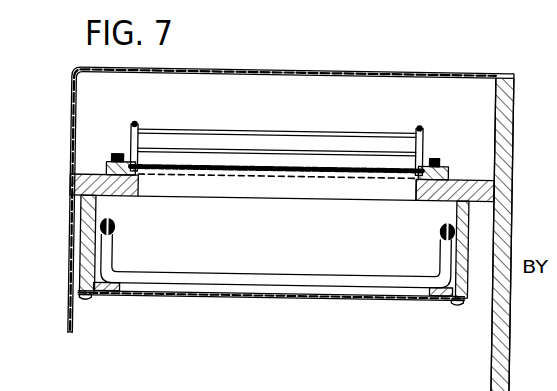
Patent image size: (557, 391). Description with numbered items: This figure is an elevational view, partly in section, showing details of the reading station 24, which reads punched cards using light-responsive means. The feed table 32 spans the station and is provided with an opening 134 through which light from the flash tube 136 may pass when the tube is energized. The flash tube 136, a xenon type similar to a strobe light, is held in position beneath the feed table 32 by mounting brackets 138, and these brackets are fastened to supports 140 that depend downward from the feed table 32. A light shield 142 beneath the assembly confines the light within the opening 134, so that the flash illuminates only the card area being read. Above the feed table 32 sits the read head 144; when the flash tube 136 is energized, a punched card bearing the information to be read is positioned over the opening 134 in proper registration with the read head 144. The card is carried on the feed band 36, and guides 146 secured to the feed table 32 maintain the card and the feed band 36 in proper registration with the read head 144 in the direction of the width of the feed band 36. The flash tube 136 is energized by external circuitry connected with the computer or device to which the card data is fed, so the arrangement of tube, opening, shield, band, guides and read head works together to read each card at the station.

The reading station 24 is at (365, 98).
The feed table 32 is at (487, 181).
The feed band 36 is at (303, 188).
The opening 134 is at (415, 194).
The flash tube 136 is at (380, 279).
The mounting brackets 138 is at (117, 223).
The supports 140 is at (90, 242).
The light shield 142 is at (226, 298).
The read head 144 is at (247, 163).
The guides 146 is at (440, 173).